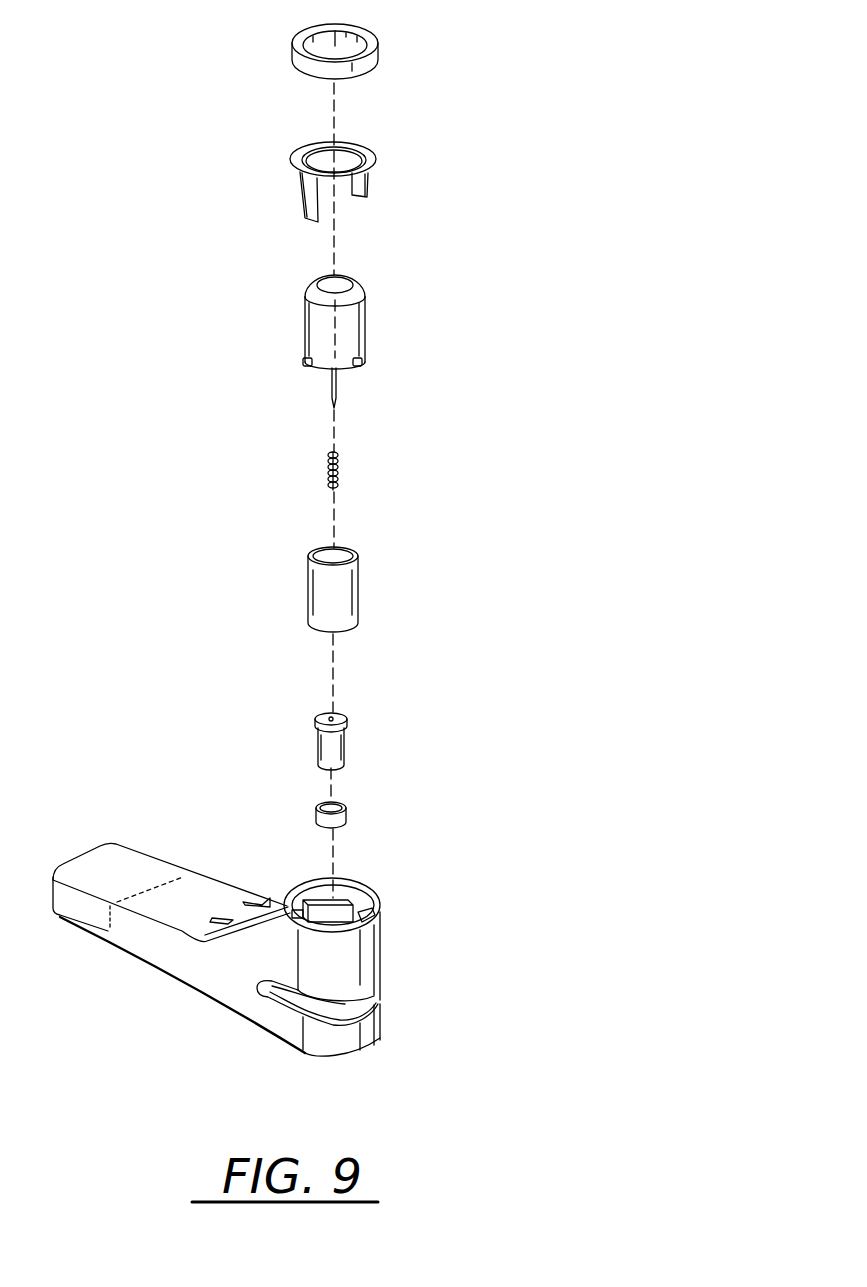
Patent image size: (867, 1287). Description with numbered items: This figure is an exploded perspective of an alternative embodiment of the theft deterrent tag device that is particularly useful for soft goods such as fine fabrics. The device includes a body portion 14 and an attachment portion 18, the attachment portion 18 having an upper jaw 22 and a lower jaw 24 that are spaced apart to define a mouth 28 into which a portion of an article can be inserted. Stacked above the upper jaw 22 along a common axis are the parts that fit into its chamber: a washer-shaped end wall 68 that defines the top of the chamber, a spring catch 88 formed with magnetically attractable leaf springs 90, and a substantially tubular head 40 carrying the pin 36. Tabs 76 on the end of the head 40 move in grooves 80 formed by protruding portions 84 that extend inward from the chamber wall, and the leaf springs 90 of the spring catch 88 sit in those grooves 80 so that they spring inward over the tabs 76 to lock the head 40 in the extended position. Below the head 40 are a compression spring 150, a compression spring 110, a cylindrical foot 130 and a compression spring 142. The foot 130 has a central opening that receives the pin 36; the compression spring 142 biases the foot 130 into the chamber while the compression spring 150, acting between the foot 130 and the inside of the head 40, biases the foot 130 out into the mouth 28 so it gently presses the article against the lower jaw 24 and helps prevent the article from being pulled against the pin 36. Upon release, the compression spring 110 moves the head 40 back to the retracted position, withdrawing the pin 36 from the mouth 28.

The body portion 14 is at (122, 870).
The attachment portion 18 is at (266, 907).
The upper jaw 22 is at (372, 960).
The lower jaw 24 is at (368, 1037).
The mouth 28 is at (360, 1005).
The pin 36 is at (331, 392).
The head 40 is at (356, 325).
The washer-shaped end wall 68 is at (378, 62).
The tabs 76 is at (306, 360).
The grooves 80 is at (357, 905).
The protruding portions 84 is at (352, 883).
The spring catch 88 is at (367, 146).
The leaf springs 90 is at (368, 183).
The compression spring 110 is at (355, 603).
The foot 130 is at (343, 748).
The compression spring 142 is at (347, 822).
The compression spring 150 is at (338, 481).